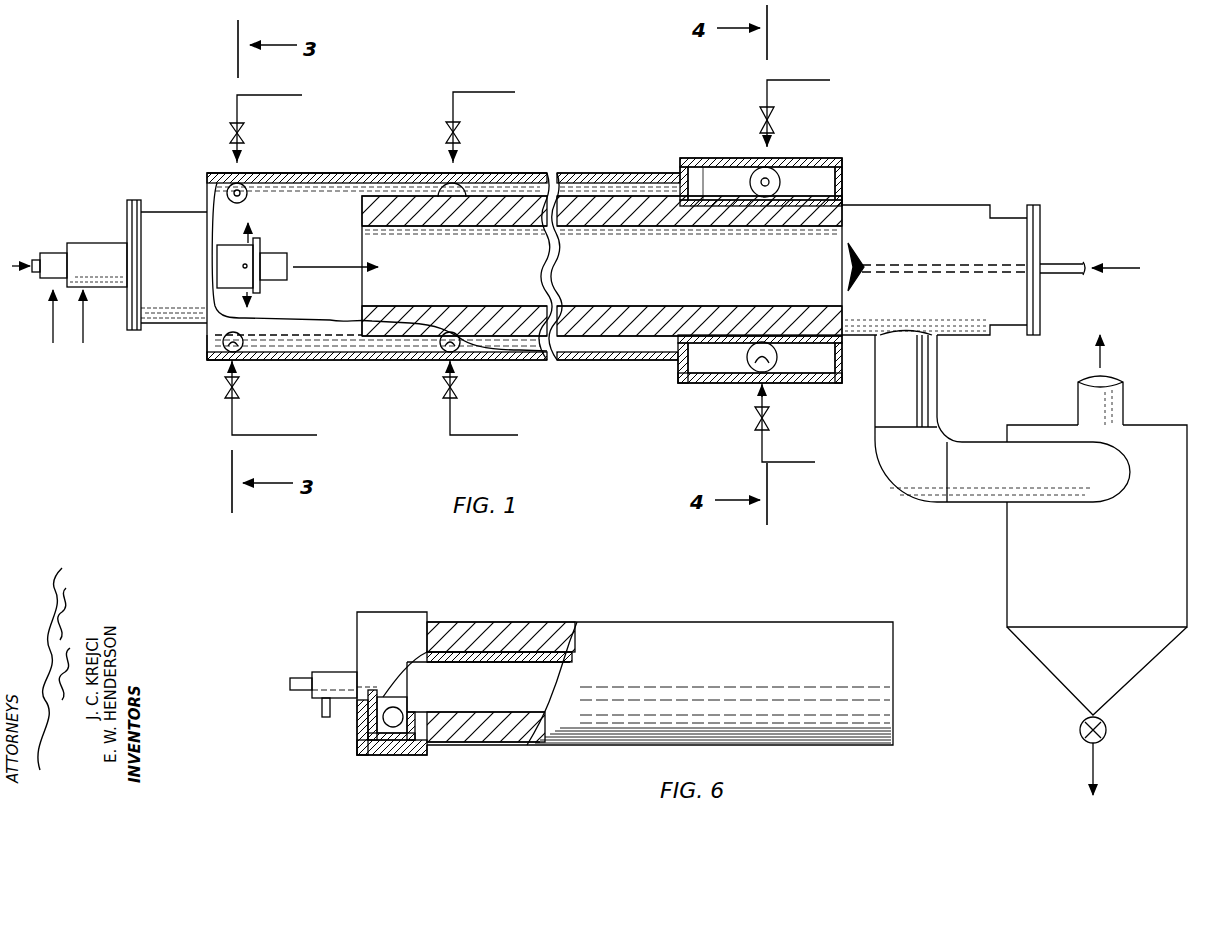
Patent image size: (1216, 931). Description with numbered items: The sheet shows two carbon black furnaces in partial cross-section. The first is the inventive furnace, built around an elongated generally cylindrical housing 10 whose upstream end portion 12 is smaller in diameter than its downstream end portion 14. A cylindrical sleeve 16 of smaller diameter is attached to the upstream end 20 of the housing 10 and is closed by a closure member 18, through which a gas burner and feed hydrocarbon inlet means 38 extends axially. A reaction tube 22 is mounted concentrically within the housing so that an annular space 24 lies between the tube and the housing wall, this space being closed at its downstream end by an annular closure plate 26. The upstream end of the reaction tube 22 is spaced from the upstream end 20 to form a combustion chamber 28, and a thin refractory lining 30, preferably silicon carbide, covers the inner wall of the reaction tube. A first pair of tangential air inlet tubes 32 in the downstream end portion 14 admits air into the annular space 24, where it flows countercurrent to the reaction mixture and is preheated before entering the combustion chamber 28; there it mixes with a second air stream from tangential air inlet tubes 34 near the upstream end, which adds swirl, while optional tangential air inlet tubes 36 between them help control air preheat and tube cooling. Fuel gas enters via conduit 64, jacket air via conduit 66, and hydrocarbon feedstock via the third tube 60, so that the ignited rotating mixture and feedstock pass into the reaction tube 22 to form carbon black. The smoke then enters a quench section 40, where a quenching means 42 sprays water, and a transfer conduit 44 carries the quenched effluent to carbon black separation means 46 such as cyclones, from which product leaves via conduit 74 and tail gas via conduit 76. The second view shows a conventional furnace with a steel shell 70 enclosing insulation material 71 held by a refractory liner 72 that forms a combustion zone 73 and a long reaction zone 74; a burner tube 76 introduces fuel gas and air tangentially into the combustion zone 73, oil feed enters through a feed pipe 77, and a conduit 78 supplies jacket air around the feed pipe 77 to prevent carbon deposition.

In FIG. 1, the housing 10 is at (525, 173).
In FIG. 1, the upstream end portion 12 is at (276, 169).
In FIG. 1, the downstream end portion 14 is at (793, 150).
In FIG. 1, the sleeve 16 is at (180, 212).
In FIG. 1, the closure member 18 is at (127, 207).
In FIG. 1, the upstream end 20 is at (207, 336).
In FIG. 1, the reaction tube 22 is at (703, 200).
In FIG. 1, the annular space 24 is at (608, 185).
In FIG. 1, the annular closure plate 26 is at (843, 177).
In FIG. 1, the combustion chamber 28 is at (329, 240).
In FIG. 1, the refractory lining 30 is at (488, 229).
In FIG. 1, the first pair of tangential air inlet tubes 32 is at (782, 187).
In FIG. 1, the second pair of tangential air inlet tubes 34 is at (248, 200).
In FIG. 1, the other pair of tangential air inlet tubes 36 is at (447, 182).
In FIG. 1, the gas burner and feed hydrocarbon inlet means 38 is at (97, 239).
In FIG. 1, the quench section 40 is at (973, 205).
In FIG. 1, the quenching means 42 is at (1070, 264).
In FIG. 1, the transfer conduit 44 is at (938, 363).
In FIG. 1, the carbon black separation means 46 is at (1117, 556).
In FIG. 1, the third tube 60 is at (16, 270).
In FIG. 1, the conduit 64 is at (84, 341).
In FIG. 1, the conduit 66 is at (53, 341).
In FIG. 6, the steel shell 70 is at (563, 747).
In FIG. 6, the insulation material 71 is at (467, 740).
In FIG. 6, the refractory liner 72 is at (495, 708).
In FIG. 6, the combustion zone 73 is at (393, 690).
In FIG. 1, the reaction zone 74 is at (1095, 772).
In FIG. 6, the reaction zone 74 is at (475, 693).
In FIG. 1, the burner tube 76 is at (1102, 360).
In FIG. 6, the burner tube 76 is at (402, 708).
In FIG. 6, the feed pipe 77 is at (292, 676).
In FIG. 6, the conduit 78 is at (322, 715).